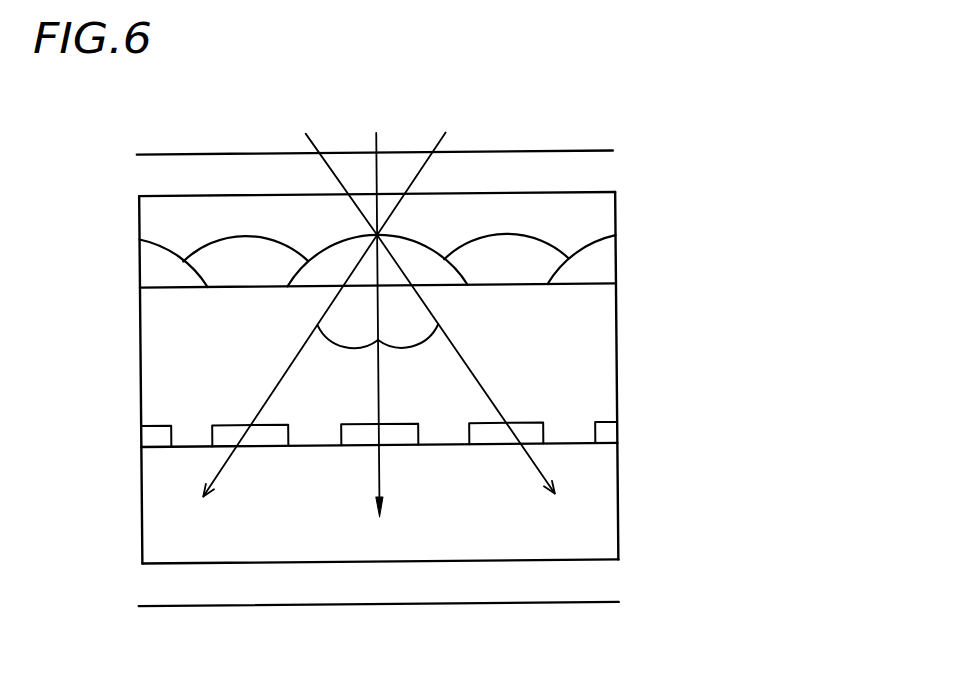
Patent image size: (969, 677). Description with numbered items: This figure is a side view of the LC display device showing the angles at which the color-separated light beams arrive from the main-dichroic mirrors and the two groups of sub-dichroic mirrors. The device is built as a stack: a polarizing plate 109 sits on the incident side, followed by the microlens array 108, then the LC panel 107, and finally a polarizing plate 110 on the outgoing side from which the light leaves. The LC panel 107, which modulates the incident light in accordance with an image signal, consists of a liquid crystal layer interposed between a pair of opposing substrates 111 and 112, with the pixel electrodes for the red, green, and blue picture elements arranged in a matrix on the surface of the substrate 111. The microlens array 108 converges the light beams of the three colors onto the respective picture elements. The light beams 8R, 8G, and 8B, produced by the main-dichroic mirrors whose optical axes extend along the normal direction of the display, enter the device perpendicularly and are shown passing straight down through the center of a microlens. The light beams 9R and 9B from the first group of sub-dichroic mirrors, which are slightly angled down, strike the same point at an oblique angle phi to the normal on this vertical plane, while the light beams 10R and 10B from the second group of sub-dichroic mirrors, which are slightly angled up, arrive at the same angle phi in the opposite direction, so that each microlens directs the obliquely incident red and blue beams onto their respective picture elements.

The LC panel 107 is at (700, 283).
The microlens array 108 is at (606, 214).
The polarizing plate 109 is at (603, 152).
The polarizing plate 110 is at (608, 604).
The substrate 111 is at (608, 493).
The substrate 112 is at (607, 360).
The red light beam 8R is at (387, 277).
The green light beam 8G is at (387, 277).
The blue light beam 8B is at (378, 138).
The blue light beam 9B is at (290, 286).
The red light beam 9R is at (313, 141).
The blue light beam 10B is at (465, 290).
The red light beam 10R is at (443, 142).